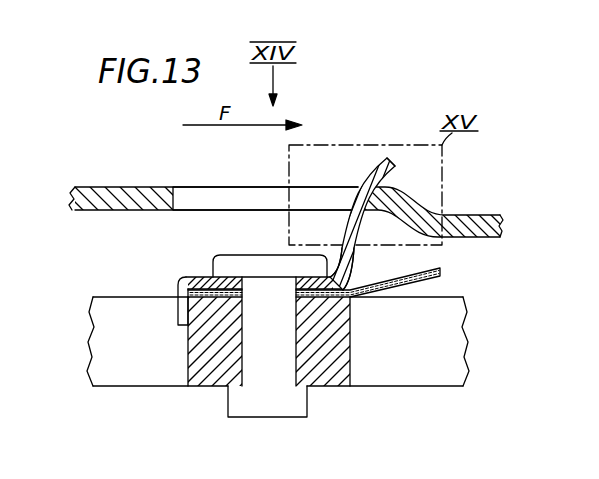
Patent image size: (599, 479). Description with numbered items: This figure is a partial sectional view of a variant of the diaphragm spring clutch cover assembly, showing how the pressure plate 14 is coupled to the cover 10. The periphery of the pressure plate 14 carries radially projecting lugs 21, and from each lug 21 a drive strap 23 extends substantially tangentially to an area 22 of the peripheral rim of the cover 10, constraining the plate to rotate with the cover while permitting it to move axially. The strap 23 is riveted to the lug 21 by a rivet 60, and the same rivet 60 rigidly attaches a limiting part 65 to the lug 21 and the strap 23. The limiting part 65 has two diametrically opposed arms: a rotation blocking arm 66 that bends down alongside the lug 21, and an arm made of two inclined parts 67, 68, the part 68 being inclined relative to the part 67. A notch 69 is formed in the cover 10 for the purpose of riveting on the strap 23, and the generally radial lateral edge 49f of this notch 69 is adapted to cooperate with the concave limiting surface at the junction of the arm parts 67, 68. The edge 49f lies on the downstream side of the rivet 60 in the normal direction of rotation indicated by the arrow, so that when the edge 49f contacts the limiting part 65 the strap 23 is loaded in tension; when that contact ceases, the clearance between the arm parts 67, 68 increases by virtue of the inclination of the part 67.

The cover 10 is at (93, 178).
The pressure plate 14 is at (422, 394).
The lug 21 is at (212, 372).
The area of peripheral rim 22 is at (466, 215).
The drive strap 23 is at (458, 270).
The lateral edge of notch 49f is at (359, 185).
The rivet 60 is at (282, 342).
The limiting part 65 is at (207, 278).
The rotation blocking arm 66 is at (179, 318).
The inclined arm part 67 is at (346, 238).
The inclined arm part 68 is at (382, 162).
The notch 69 is at (187, 200).